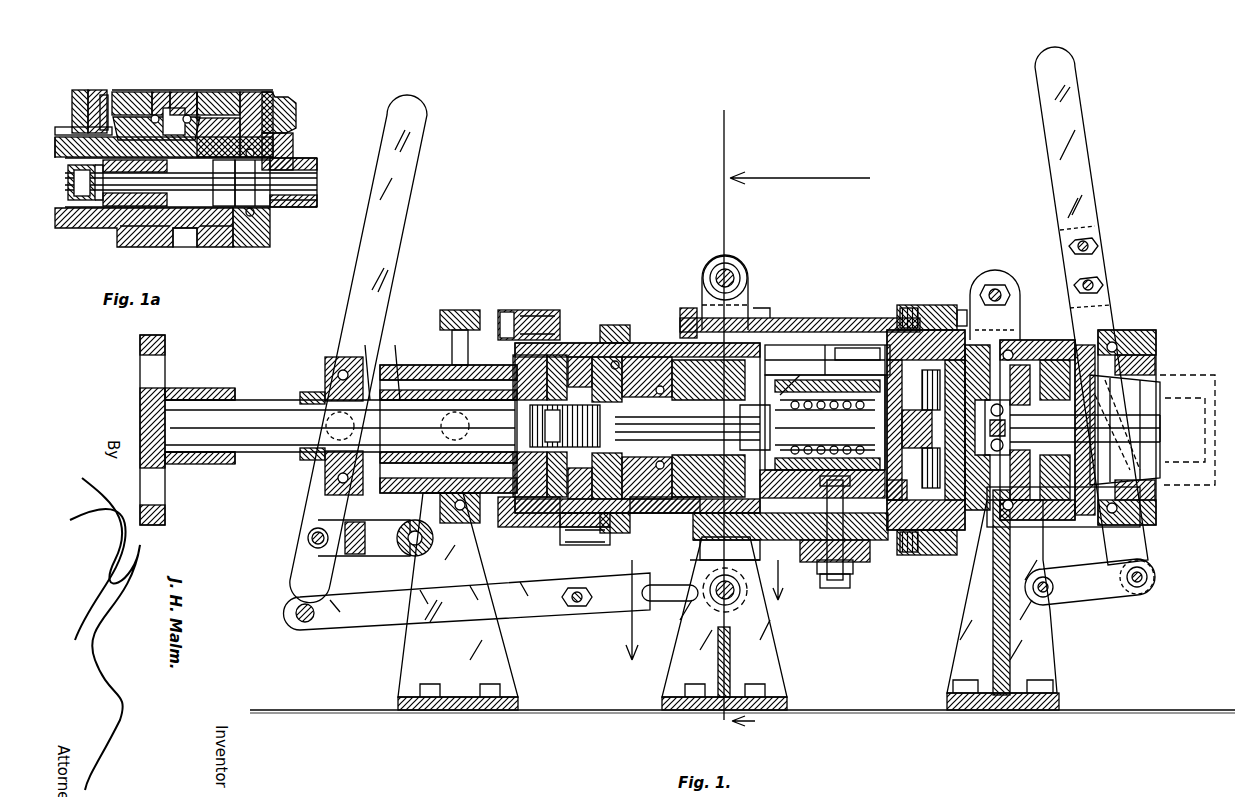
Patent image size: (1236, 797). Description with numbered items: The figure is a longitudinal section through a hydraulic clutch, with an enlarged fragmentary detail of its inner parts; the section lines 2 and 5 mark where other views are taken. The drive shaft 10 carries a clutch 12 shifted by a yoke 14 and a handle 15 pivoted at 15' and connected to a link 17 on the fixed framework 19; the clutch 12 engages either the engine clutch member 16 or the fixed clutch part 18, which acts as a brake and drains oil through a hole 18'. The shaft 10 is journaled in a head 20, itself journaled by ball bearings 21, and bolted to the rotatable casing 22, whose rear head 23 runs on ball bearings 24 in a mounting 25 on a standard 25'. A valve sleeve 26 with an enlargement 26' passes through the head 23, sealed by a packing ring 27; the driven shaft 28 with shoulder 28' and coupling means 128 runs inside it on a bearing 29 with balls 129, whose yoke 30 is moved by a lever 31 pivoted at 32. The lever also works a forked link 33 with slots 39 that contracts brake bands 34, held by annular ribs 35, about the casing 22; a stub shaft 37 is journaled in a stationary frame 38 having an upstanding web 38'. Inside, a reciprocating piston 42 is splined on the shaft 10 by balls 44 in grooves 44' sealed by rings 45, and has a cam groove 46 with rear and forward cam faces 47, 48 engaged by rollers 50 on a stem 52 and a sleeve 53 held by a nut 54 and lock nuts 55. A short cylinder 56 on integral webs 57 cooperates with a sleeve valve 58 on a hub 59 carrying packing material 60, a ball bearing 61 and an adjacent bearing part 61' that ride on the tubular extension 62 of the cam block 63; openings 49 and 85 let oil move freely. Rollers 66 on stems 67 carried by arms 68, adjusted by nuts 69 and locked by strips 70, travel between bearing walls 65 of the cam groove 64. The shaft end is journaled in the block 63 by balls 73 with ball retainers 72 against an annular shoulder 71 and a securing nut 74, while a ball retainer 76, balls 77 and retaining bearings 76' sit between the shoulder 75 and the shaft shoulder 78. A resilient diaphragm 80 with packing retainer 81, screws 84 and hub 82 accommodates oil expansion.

In FIG. 1, the section line 2- 2 is at (794, 421).
In FIG. 1, the section line 5- 5 is at (704, 629).
In FIG. 1A, the drive shaft 10 is at (318, 182).
In FIG. 1, the drive shaft 10 is at (1150, 432).
In FIG. 1, the clutch 12 is at (1140, 372).
In FIG. 1, the yoke 14 is at (1125, 330).
In FIG. 1, the handle 15 is at (1091, 306).
In FIG. 1, the pivot 15' is at (1147, 438).
In FIG. 1, the clutch member 16 is at (1185, 380).
In FIG. 1, the link 17 is at (1112, 590).
In FIG. 1, the fixed clutch part 18 is at (1037, 412).
In FIG. 1, the hole 18' is at (1062, 439).
In FIG. 1, the fixed framework 19 is at (1040, 542).
In FIG. 1, the head 20 is at (946, 305).
In FIG. 1, the ball bearings 21 is at (972, 325).
In FIG. 1, the rotatable casing 22 is at (884, 345).
In FIG. 1, the rear head 23 is at (522, 310).
In FIG. 1, the ball bearings 24 is at (436, 365).
In FIG. 1, the mounting 25 is at (452, 403).
In FIG. 1, the standard 25' is at (443, 601).
In FIG. 1, the valve sleeve 26 is at (361, 361).
In FIG. 1, the enlargement of valve sleeve 26' is at (562, 380).
In FIG. 1, the packing ring 27 is at (398, 345).
In FIG. 1, the driven shaft 28 is at (340, 403).
In FIG. 1, the shoulder 28' is at (517, 426).
In FIG. 1, the bearing 29 is at (322, 374).
In FIG. 1, the yoke 30 is at (340, 368).
In FIG. 1, the lever 31 is at (388, 232).
In FIG. 1, the pivot 32 is at (306, 540).
In FIG. 1, the forked link 33 is at (552, 606).
In FIG. 1, the brake bands 34 is at (705, 272).
In FIG. 1, the annular ribs 35 is at (750, 290).
In FIG. 1, the stub shaft 37 is at (718, 610).
In FIG. 1, the stationary frame 38 is at (738, 623).
In FIG. 1, the upstanding web 38' is at (710, 662).
In FIG. 1, the slots 39 is at (672, 594).
In FIG. 1A, the reciprocating piston 42 is at (296, 112).
In FIG. 1, the reciprocating piston 42 is at (790, 360).
In FIG. 1, the balls 44 is at (838, 421).
In FIG. 1A, the flanges or rings 45 is at (292, 150).
In FIG. 1, the flanges or rings 45 is at (839, 421).
In FIG. 1, the cam groove 46 is at (830, 345).
In FIG. 1, the rear cam face 47 is at (794, 376).
In FIG. 1, the forward cam face 48 is at (850, 345).
In FIG. 1, the large openings 49 is at (895, 330).
In FIG. 1, the rollers 50 is at (905, 532).
In FIG. 1, the stem 52 is at (840, 590).
In FIG. 1, the sleeve 53 is at (806, 562).
In FIG. 1, the nut 54 is at (855, 572).
In FIG. 1, the lock nuts 55 is at (850, 586).
In FIG. 1, the short cylinder 56 is at (770, 318).
In FIG. 1, the integral webs 57 is at (686, 306).
In FIG. 1, the sleeve valve 58 is at (620, 325).
In FIG. 1A, the packing material 60 is at (74, 128).
In FIG. 1, the packing material 60 is at (590, 360).
In FIG. 1A, the ball bearing 61 is at (96, 90).
In FIG. 1, the ball bearing 61 is at (620, 404).
In FIG. 1A, the cam block 63 is at (255, 248).
In FIG. 1, the cam block 63 is at (652, 355).
In FIG. 1A, the bearing walls 65 is at (220, 248).
In FIG. 1, the bearing walls 65 is at (708, 428).
In FIG. 1A, the rollers 66 is at (132, 94).
In FIG. 1, the rollers 66 is at (645, 512).
In FIG. 1A, the arms 68 is at (218, 92).
In FIG. 1, the arms 68 is at (700, 520).
In FIG. 1A, the nuts 69 is at (196, 93).
In FIG. 1, the nuts 69 is at (598, 355).
In FIG. 1A, the annular shoulder 71 is at (141, 183).
In FIG. 1, the annular shoulder 71 is at (576, 426).
In FIG. 1A, the balls 73 is at (116, 182).
In FIG. 1, the balls 73 is at (687, 428).
In FIG. 1A, the ball retainer 76 is at (223, 183).
In FIG. 1, the ball retainer 76 is at (750, 427).
In FIG. 1, the resilient diaphragm 80 is at (945, 556).
In FIG. 1, the packing retainer 81 is at (968, 480).
In FIG. 1, the hub 82 is at (979, 427).
In FIG. 1, the screws 84 is at (926, 429).
In FIG. 1, the openings 85 is at (606, 530).
In FIG. 1, the coupling means 128 is at (160, 380).
In FIG. 1, the balls 129 is at (300, 396).
In FIG. 1A, the hub 59 is at (66, 126).
In FIG. 1A, the ring 61' is at (111, 97).
In FIG. 1A, the tubular extension 62 is at (80, 236).
In FIG. 1, the tubular extension 62 is at (572, 530).
In FIG. 1A, the cam groove 64 is at (184, 248).
In FIG. 1A, the stems 67 is at (160, 92).
In FIG. 1A, the locking strips or wires 70 is at (174, 108).
In FIG. 1A, the ball retainers 72 is at (102, 226).
In FIG. 1A, the securing nut 74 is at (81, 182).
In FIG. 1A, the shoulder 75 is at (252, 93).
In FIG. 1A, the balls 77 is at (280, 236).
In FIG. 1A, the shoulder 78 is at (255, 212).
In FIG. 1A, the retaining bearings 76' is at (304, 221).
In FIG. 1A, the grooves 44' is at (313, 172).